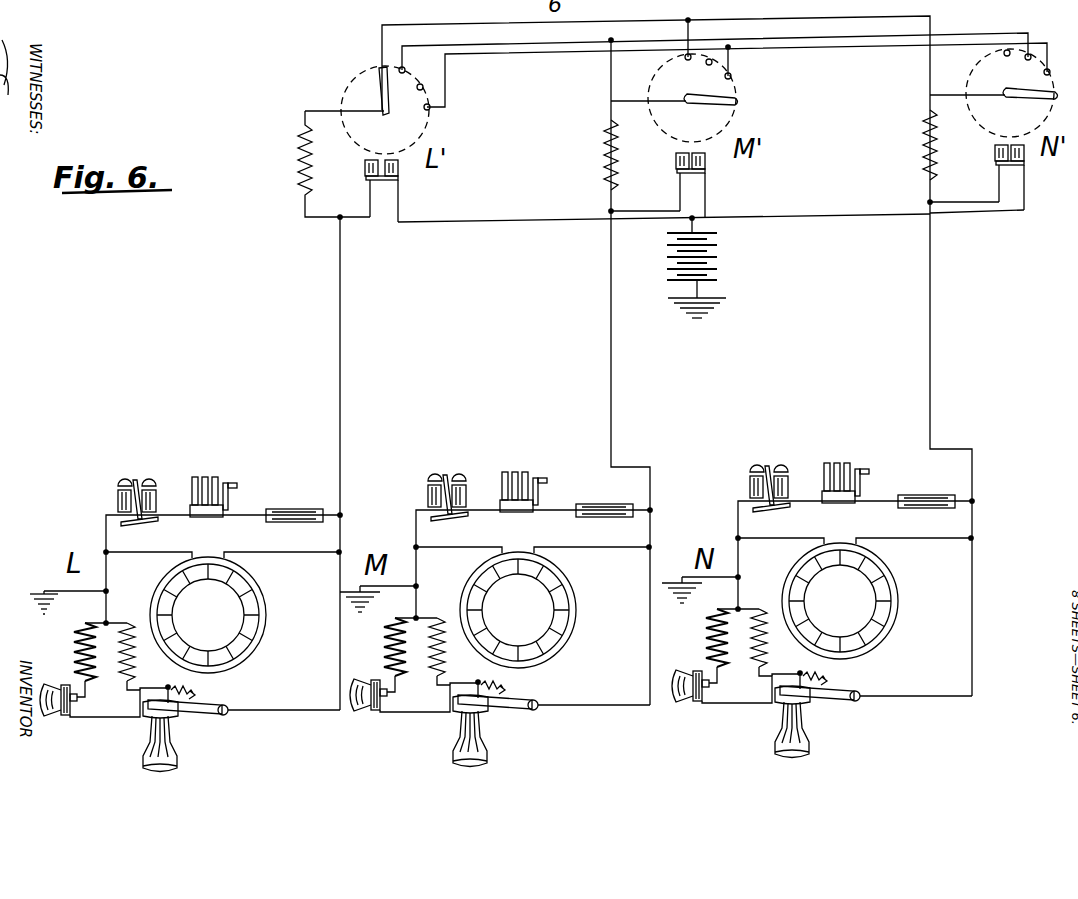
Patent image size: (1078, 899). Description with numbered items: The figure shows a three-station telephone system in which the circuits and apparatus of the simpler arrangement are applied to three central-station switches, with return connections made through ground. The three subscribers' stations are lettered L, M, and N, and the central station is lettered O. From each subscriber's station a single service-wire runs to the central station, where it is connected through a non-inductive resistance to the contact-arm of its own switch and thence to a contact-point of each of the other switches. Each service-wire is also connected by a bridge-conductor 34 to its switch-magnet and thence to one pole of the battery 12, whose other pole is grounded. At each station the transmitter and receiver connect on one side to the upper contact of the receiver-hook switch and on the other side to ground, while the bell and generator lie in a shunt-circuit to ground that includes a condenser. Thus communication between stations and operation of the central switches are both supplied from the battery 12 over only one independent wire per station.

The central-station battery 12 is at (713, 267).
The bridge-conductor 34 is at (866, 216).